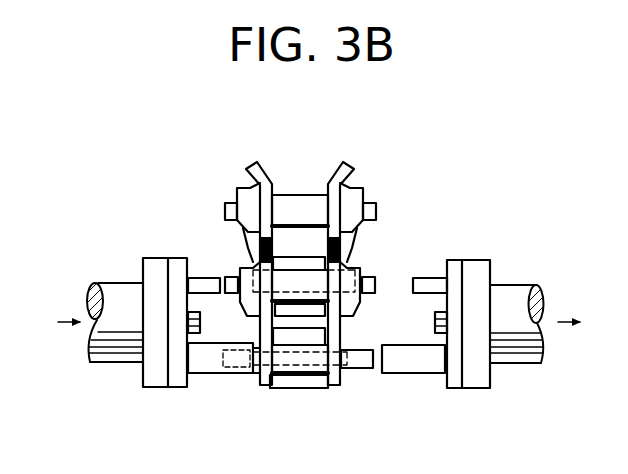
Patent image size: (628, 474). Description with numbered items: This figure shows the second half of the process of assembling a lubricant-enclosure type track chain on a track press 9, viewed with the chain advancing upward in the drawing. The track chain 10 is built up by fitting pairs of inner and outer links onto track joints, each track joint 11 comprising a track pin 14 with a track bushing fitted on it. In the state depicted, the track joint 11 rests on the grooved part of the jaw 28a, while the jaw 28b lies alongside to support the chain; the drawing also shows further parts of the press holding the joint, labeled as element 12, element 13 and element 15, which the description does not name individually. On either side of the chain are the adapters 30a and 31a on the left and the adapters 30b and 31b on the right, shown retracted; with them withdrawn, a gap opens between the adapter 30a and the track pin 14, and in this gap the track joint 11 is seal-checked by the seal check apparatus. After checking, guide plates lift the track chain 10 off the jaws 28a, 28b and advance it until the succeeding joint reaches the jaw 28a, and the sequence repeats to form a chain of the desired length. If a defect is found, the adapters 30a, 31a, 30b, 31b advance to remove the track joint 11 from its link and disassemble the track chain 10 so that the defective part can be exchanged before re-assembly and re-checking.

The track press 9 is at (524, 281).
The track chain 10 is at (318, 280).
The track joint 11 is at (289, 187).
The link arm 12 is at (266, 182).
The bearing block 13 is at (254, 191).
The track pin 14 is at (376, 285).
The roller 15 is at (315, 203).
The jaw 28a is at (313, 310).
The jaw 28b is at (318, 384).
The adapter 30a is at (203, 273).
The adapter 30b is at (434, 281).
The adapter 31a is at (207, 364).
The adapter 31b is at (410, 367).